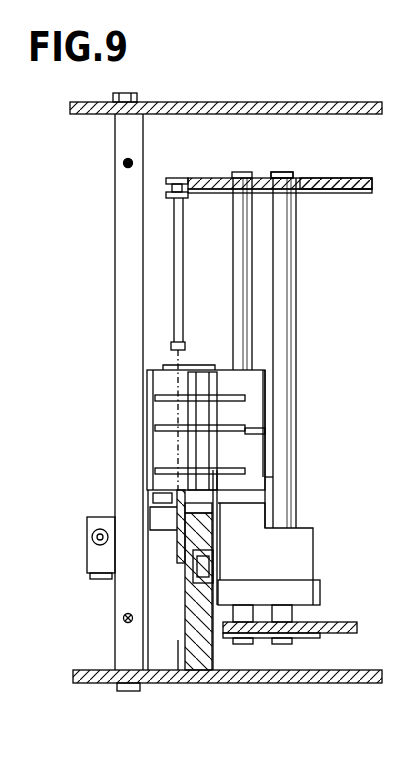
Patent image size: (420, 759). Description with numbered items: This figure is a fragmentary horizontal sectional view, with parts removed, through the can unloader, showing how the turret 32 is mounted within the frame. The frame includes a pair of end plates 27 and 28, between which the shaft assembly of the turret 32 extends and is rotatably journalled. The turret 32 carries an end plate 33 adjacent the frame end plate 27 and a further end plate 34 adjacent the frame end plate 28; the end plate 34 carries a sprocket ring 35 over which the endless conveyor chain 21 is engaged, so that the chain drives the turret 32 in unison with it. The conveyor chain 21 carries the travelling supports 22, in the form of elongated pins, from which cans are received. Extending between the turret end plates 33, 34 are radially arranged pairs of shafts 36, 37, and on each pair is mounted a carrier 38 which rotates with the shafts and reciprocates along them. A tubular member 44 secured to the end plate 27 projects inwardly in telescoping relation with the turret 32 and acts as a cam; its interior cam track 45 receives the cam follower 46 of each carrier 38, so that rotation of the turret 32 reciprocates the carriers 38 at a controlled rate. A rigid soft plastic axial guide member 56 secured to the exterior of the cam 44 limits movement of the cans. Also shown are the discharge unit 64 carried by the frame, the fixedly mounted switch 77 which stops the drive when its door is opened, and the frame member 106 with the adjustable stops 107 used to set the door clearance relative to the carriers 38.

The endless conveyor chain 21 is at (178, 178).
The travelling supports 22 is at (188, 307).
The end plate 27 is at (287, 684).
The end plate 28 is at (290, 101).
The turret 32 is at (290, 172).
The end plate 33 is at (357, 621).
The end plate 34 is at (350, 178).
The sprocket ring 35 is at (207, 196).
The shaft 36 is at (235, 293).
The shaft 37 is at (294, 297).
The carrier 38 is at (315, 546).
The tubular member 44 is at (197, 664).
The cam track 45 is at (205, 595).
The cam follower 46 is at (209, 568).
The axial guide member 56 is at (178, 548).
The discharge unit 64 is at (147, 435).
The switch 77 is at (100, 517).
The frame member 106 is at (124, 290).
The adjustable stops 107 is at (123, 163).